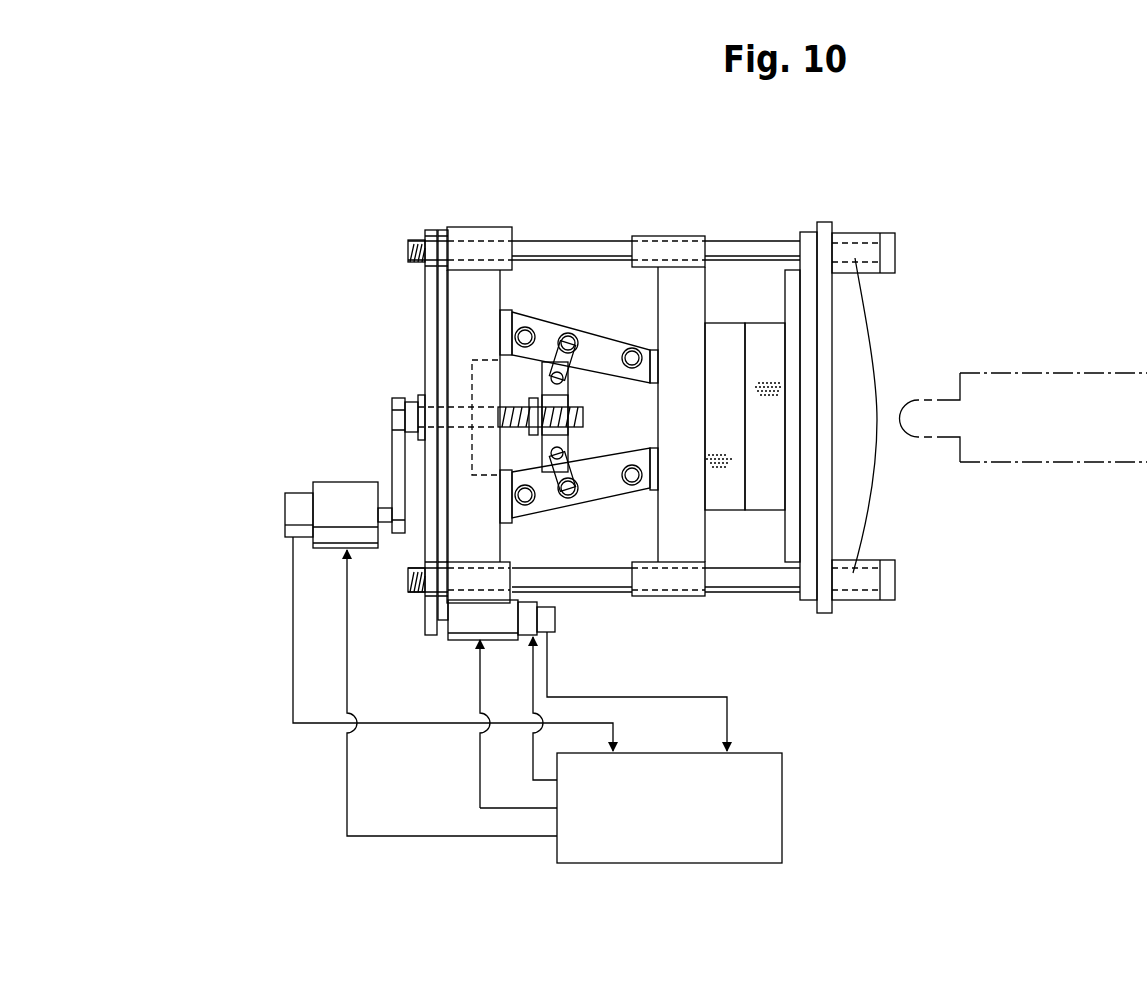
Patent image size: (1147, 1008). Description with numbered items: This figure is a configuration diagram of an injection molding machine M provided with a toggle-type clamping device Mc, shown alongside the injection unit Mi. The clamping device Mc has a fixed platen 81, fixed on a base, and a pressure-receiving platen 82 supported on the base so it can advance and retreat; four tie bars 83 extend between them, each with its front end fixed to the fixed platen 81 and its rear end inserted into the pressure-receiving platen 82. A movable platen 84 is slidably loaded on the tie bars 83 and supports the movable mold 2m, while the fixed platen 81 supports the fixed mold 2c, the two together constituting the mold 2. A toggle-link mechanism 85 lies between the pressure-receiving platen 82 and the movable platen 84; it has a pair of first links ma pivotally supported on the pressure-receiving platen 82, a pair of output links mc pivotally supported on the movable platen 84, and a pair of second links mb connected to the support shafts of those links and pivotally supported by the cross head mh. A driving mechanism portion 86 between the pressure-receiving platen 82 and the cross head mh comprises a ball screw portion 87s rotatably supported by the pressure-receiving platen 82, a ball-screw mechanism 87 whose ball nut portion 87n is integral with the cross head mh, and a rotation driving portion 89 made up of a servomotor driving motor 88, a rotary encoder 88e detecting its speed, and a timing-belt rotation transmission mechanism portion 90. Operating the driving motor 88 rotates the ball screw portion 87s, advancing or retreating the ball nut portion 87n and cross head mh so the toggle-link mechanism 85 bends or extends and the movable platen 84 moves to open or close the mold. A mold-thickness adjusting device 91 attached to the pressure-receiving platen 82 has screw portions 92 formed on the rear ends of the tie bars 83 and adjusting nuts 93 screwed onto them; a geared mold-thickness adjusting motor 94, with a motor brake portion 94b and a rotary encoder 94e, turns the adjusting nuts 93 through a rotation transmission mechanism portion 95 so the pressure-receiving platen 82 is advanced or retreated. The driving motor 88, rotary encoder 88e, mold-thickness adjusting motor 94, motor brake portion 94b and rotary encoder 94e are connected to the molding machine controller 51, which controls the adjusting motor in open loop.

The mold 2 is at (825, 426).
The fixed mold 2c is at (765, 323).
The movable mold 2m is at (720, 512).
The molding machine controller 51 is at (782, 812).
The fixed platen 81 is at (870, 505).
The pressure-receiving platen 82 is at (490, 227).
The tie bars 83 is at (765, 242).
The movable platen 84 is at (672, 236).
The toggle-link mechanism 85 is at (530, 472).
The driving mechanism portion 86 is at (302, 436).
The ball-screw mechanism 87 is at (528, 455).
The ball nut portion 87n is at (500, 400).
The ball screw portion 87s is at (583, 417).
The driving motor 88 is at (318, 483).
The rotary encoder 88e is at (285, 517).
The rotation driving portion 89 is at (330, 448).
The rotation transmission mechanism portion 90 is at (387, 457).
The mold-thickness adjusting device 91 is at (375, 278).
The screw portions 92 is at (408, 250).
The adjusting nuts 93 is at (440, 232).
The mold-thickness adjusting motor 94 is at (458, 640).
The motor brake portion 94b is at (500, 724).
The rotary encoder 94e is at (555, 625).
The rotation transmission mechanism portion 95 is at (504, 704).
The injection molding machine M is at (1002, 248).
The clamping device Mc is at (883, 222).
The injection unit Mi is at (1072, 330).
The first links ma is at (547, 330).
The second links mb is at (568, 376).
The output links mc is at (600, 346).
The cross head mh is at (533, 398).